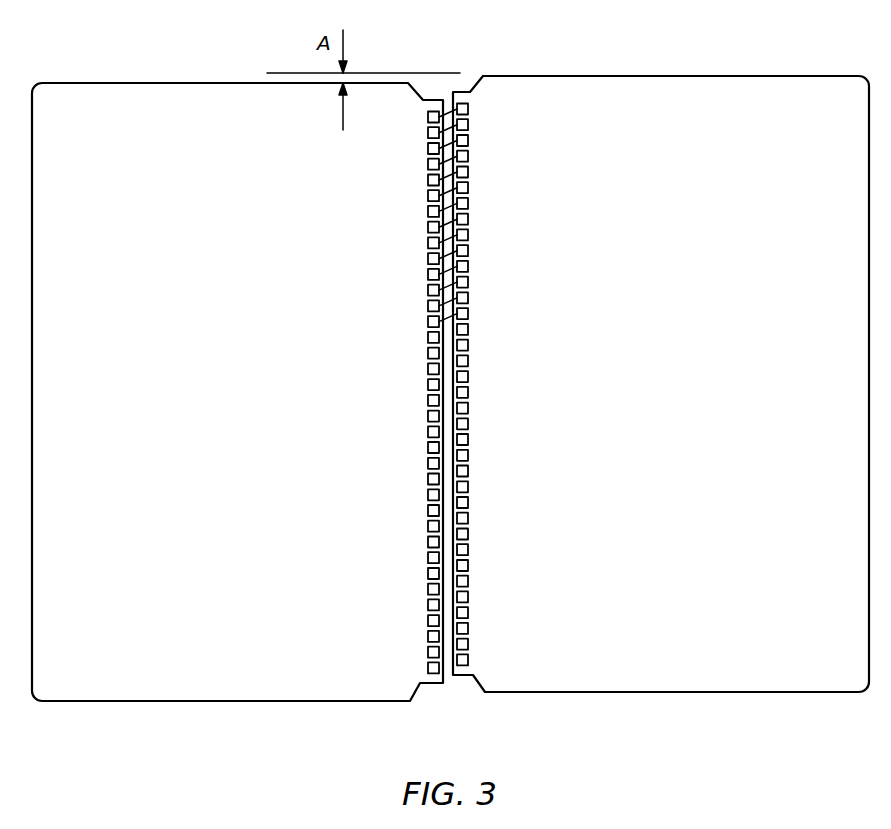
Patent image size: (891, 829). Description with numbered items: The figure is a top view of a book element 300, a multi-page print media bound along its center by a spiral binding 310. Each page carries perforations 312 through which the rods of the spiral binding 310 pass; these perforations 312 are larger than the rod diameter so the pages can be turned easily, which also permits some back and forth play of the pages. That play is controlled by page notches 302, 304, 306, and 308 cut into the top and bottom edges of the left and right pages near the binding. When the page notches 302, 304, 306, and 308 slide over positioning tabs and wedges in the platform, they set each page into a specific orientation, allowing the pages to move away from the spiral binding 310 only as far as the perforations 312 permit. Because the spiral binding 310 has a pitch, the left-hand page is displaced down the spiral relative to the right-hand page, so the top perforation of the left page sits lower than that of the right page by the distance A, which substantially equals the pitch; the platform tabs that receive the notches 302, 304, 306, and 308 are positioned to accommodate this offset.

The flexible display device 300 is at (218, 338).
The page notch 302 is at (474, 76).
The page notch 304 is at (470, 694).
The page notch 306 is at (430, 88).
The page notch 308 is at (423, 700).
The spiral binding 310 is at (466, 264).
The perforations in the pages 312 is at (481, 335).